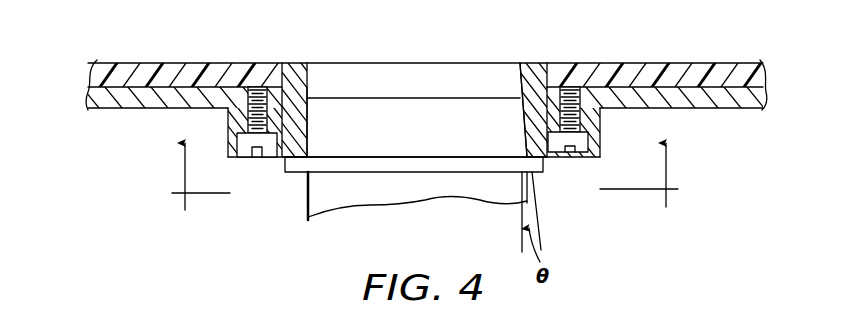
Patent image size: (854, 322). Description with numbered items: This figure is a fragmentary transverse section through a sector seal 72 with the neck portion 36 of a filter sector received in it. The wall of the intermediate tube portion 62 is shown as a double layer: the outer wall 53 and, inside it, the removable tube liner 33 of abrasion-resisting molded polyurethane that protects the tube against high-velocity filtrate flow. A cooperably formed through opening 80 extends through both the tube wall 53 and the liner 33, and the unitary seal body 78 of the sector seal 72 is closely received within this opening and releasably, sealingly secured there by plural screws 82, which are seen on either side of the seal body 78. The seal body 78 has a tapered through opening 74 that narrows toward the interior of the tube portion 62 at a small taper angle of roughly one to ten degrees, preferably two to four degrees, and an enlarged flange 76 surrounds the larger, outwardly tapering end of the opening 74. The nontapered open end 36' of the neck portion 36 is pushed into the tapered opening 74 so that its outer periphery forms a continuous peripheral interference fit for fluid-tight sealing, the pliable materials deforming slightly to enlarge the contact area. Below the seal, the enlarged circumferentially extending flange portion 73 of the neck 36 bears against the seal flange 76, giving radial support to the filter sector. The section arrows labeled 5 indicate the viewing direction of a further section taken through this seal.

The tube liner 33 is at (222, 63).
The intermediate tube portion 62 is at (139, 108).
The outer wall 53 is at (720, 107).
The seal body 78 is at (300, 63).
The tapered through opening 74 is at (520, 77).
The through opening 80 is at (307, 88).
The open end 36' is at (417, 87).
The neck portion 36 is at (417, 204).
The flange portion 73 is at (432, 165).
The sector seal 72 is at (293, 165).
The screws 82 is at (254, 158).
The flange 76 is at (600, 128).
The section line 5 is at (425, 190).